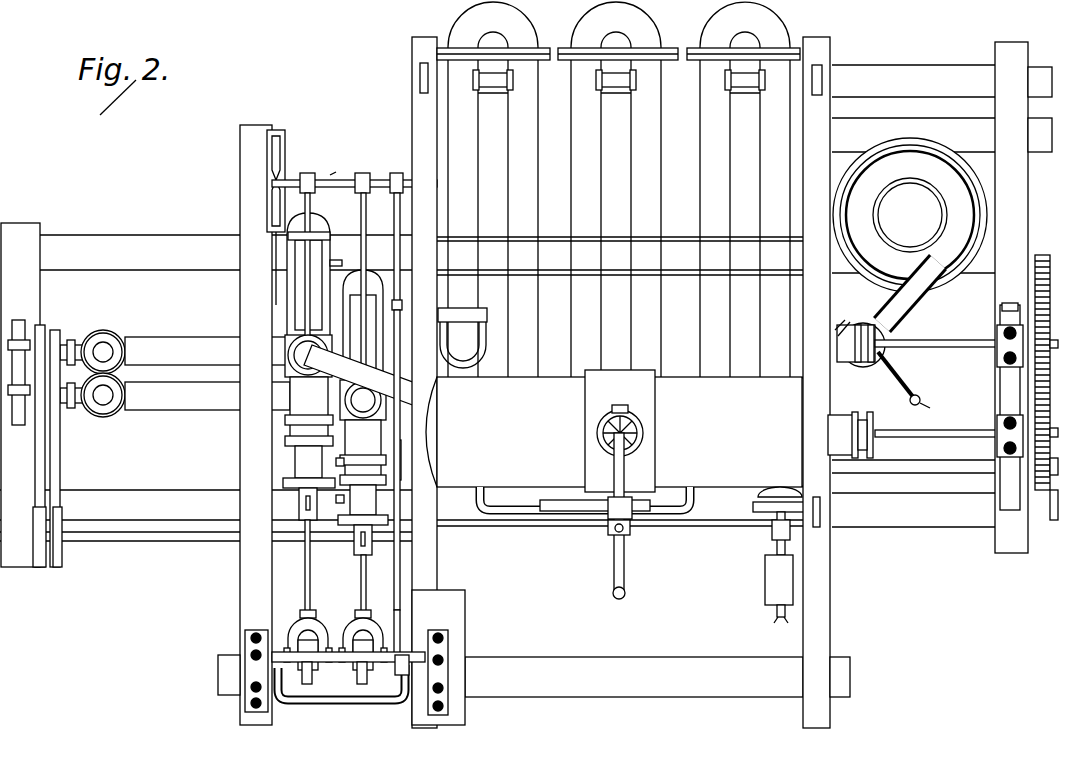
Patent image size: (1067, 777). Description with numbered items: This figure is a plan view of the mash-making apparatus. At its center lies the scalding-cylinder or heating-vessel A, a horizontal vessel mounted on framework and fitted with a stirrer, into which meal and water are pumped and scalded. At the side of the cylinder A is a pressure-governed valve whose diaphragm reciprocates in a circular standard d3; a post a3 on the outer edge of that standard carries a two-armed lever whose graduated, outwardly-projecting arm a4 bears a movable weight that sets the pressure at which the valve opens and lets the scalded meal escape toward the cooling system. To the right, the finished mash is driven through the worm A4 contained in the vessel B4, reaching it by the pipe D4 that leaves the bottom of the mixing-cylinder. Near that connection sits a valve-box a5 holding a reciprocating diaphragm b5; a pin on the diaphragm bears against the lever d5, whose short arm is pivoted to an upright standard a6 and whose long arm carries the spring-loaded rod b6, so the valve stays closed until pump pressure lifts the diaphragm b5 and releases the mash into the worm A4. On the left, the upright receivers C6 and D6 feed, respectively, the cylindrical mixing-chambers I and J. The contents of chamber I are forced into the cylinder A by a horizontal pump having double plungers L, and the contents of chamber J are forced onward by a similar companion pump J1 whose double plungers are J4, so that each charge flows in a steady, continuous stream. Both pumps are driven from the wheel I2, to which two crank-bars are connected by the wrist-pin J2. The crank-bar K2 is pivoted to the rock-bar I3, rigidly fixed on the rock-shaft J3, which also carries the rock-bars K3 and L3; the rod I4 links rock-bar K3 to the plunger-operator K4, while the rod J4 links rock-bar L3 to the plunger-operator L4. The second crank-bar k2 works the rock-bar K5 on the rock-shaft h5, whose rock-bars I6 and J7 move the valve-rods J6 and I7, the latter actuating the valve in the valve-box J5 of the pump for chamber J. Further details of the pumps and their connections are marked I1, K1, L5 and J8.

The scalding-cylinder A is at (627, 432).
The worm A4 is at (910, 215).
The vessel B4 is at (926, 293).
The circular standard d3 is at (769, 502).
The post a3 is at (772, 528).
The outwardly-projecting arm a4 is at (779, 595).
The upright standard a6 is at (855, 325).
The reciprocating diaphragm b5 is at (882, 355).
The lever d5 is at (900, 375).
The valve-box a5 is at (898, 400).
The rod b6 is at (931, 410).
The pipe D4 is at (835, 372).
The upright receiver C6 is at (113, 340).
The upright receiver D6 is at (115, 412).
The horizontal mixing-chamber I is at (207, 351).
The horizontal mixing-chamber J is at (207, 396).
The rock-bar I6 is at (354, 175).
The rock-shaft h5 is at (333, 171).
The rock-bar J7 is at (363, 174).
The rock-bar K5 is at (402, 239).
The rod coupling k2 is at (402, 305).
The plunger-operator K4 is at (310, 220).
The double plungers L is at (309, 366).
The valve-rod J6 is at (312, 238).
The plunger-operator L4 is at (339, 257).
The rod I4 is at (305, 350).
The cylinder J1 is at (363, 412).
The valve-rod I7 is at (369, 293).
The valve-box J5 is at (353, 400).
The valve casing K1 is at (333, 463).
The valve casing L5 is at (340, 502).
The inclined pipe J8 is at (385, 358).
The wrist-pin J2 is at (420, 420).
The rod I1 is at (403, 461).
The wheel I2 is at (308, 622).
The double plungers J4 is at (363, 622).
The crank-bar K2 is at (405, 626).
The rock-bar K3 is at (312, 664).
The rock-shaft J3 is at (327, 675).
The rock-bar L3 is at (362, 666).
The rock-bar I3 is at (408, 690).